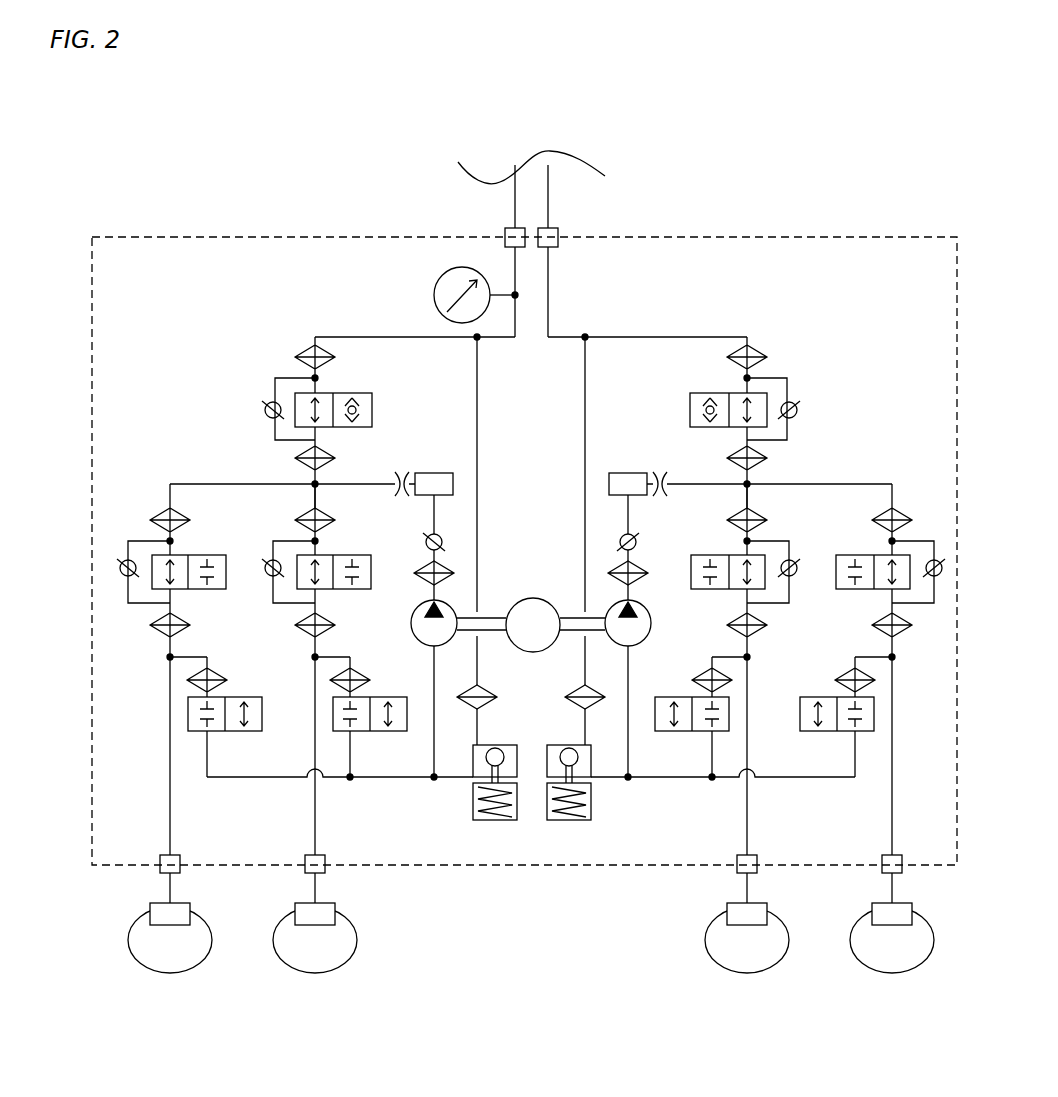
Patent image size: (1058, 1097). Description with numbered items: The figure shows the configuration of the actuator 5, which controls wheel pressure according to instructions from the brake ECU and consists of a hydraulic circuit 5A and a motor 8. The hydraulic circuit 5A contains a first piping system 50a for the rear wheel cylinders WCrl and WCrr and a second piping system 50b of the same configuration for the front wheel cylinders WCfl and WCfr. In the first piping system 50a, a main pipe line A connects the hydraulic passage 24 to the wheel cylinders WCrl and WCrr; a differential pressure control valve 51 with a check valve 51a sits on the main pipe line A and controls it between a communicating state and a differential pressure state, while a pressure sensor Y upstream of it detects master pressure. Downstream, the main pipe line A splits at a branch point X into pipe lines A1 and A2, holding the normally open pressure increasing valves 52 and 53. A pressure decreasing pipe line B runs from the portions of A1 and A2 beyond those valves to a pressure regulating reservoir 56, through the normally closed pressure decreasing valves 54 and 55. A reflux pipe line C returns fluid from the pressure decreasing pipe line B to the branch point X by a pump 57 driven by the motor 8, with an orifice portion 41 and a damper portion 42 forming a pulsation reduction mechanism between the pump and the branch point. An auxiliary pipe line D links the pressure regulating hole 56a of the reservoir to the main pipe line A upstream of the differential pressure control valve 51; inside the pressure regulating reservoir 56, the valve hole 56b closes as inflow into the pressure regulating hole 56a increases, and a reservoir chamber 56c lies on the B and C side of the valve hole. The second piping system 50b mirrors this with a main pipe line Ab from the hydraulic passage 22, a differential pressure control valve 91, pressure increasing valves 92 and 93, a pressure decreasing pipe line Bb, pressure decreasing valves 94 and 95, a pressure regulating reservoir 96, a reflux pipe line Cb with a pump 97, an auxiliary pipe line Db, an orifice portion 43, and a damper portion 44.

The actuator 5 is at (233, 222).
The hydraulic circuit 5A is at (280, 322).
The first piping system 50a is at (192, 332).
The second piping system 50b is at (857, 332).
The hydraulic passage 22 is at (551, 194).
The hydraulic passage 24 is at (512, 198).
The pressure sensor Y is at (436, 286).
The main pipe line A is at (352, 333).
The main pipe line Ab is at (680, 335).
The differential pressure control valve 51 is at (355, 393).
The check valve 51a is at (262, 405).
The differential pressure control valve 91 is at (690, 393).
The branch point X is at (313, 484).
The orifice portion 41 is at (402, 470).
The damper portion 42 is at (438, 473).
The orifice portion 43 is at (660, 470).
The damper portion 44 is at (622, 473).
The pressure increasing valve 52 is at (206, 555).
The pressure increasing valve 53 is at (352, 555).
The pressure increasing valve 92 is at (856, 555).
The pressure increasing valve 93 is at (710, 555).
The pressure decreasing valve 54 is at (234, 697).
The pressure decreasing valve 55 is at (392, 697).
The pressure decreasing valve 94 is at (810, 697).
The pressure decreasing valve 95 is at (668, 697).
The pump 57 is at (423, 600).
The pump 97 is at (640, 600).
The motor 8 is at (533, 598).
The reflux pipe line C is at (437, 695).
The reflux pipe line Cb is at (627, 695).
The auxiliary pipe line D is at (478, 522).
The auxiliary pipe line Db is at (583, 522).
The pressure regulating reservoir 56 is at (470, 815).
The pressure regulating hole 56a is at (482, 703).
The valve hole 56b is at (504, 760).
The reservoir chamber 56c is at (473, 790).
The pressure regulating reservoir 96 is at (594, 815).
The pressure decreasing pipe line B is at (262, 779).
The pressure decreasing pipe line Bb is at (780, 779).
The pipe line A1 is at (168, 750).
The pipe line A2 is at (313, 750).
The wheel cylinder WCrl is at (150, 905).
The wheel cylinder WCrr is at (295, 905).
The wheel cylinder WCfl is at (727, 905).
The wheel cylinder WCfr is at (872, 905).